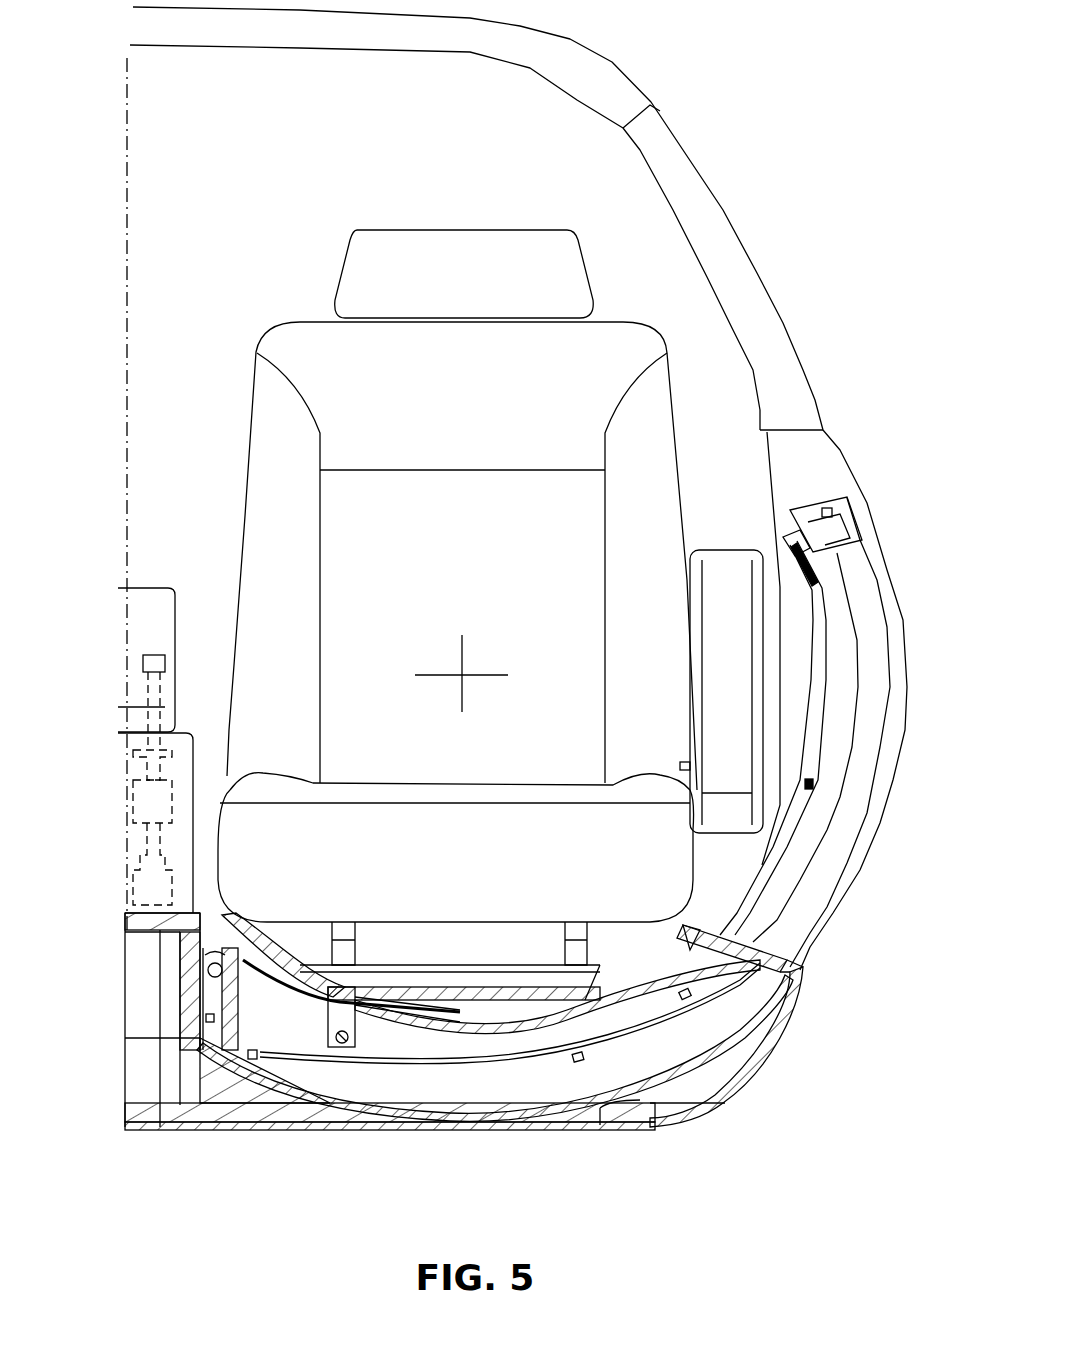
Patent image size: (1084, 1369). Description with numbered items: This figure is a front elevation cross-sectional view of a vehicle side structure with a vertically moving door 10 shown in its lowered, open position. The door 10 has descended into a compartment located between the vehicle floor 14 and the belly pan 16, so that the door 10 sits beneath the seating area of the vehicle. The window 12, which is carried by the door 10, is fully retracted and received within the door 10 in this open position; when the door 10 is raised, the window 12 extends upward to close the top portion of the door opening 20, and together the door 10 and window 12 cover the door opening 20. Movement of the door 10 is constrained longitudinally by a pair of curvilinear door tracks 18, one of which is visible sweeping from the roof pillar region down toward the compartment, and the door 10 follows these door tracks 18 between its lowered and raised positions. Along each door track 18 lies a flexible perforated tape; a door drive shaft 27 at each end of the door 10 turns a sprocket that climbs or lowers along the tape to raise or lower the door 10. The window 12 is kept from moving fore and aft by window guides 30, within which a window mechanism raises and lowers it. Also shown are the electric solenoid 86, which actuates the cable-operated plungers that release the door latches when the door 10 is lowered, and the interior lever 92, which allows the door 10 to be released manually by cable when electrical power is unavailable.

The vertically moving door 10 is at (767, 988).
The window 12 is at (695, 1010).
The vehicle floor 14 is at (390, 995).
The belly pan 16 is at (305, 1128).
The door track 18 is at (848, 812).
The door opening 20 is at (840, 436).
The door drive shaft 27 is at (330, 1032).
The window guide 30 is at (420, 1068).
The electric solenoid 86 is at (135, 893).
The interior lever 92 is at (152, 693).